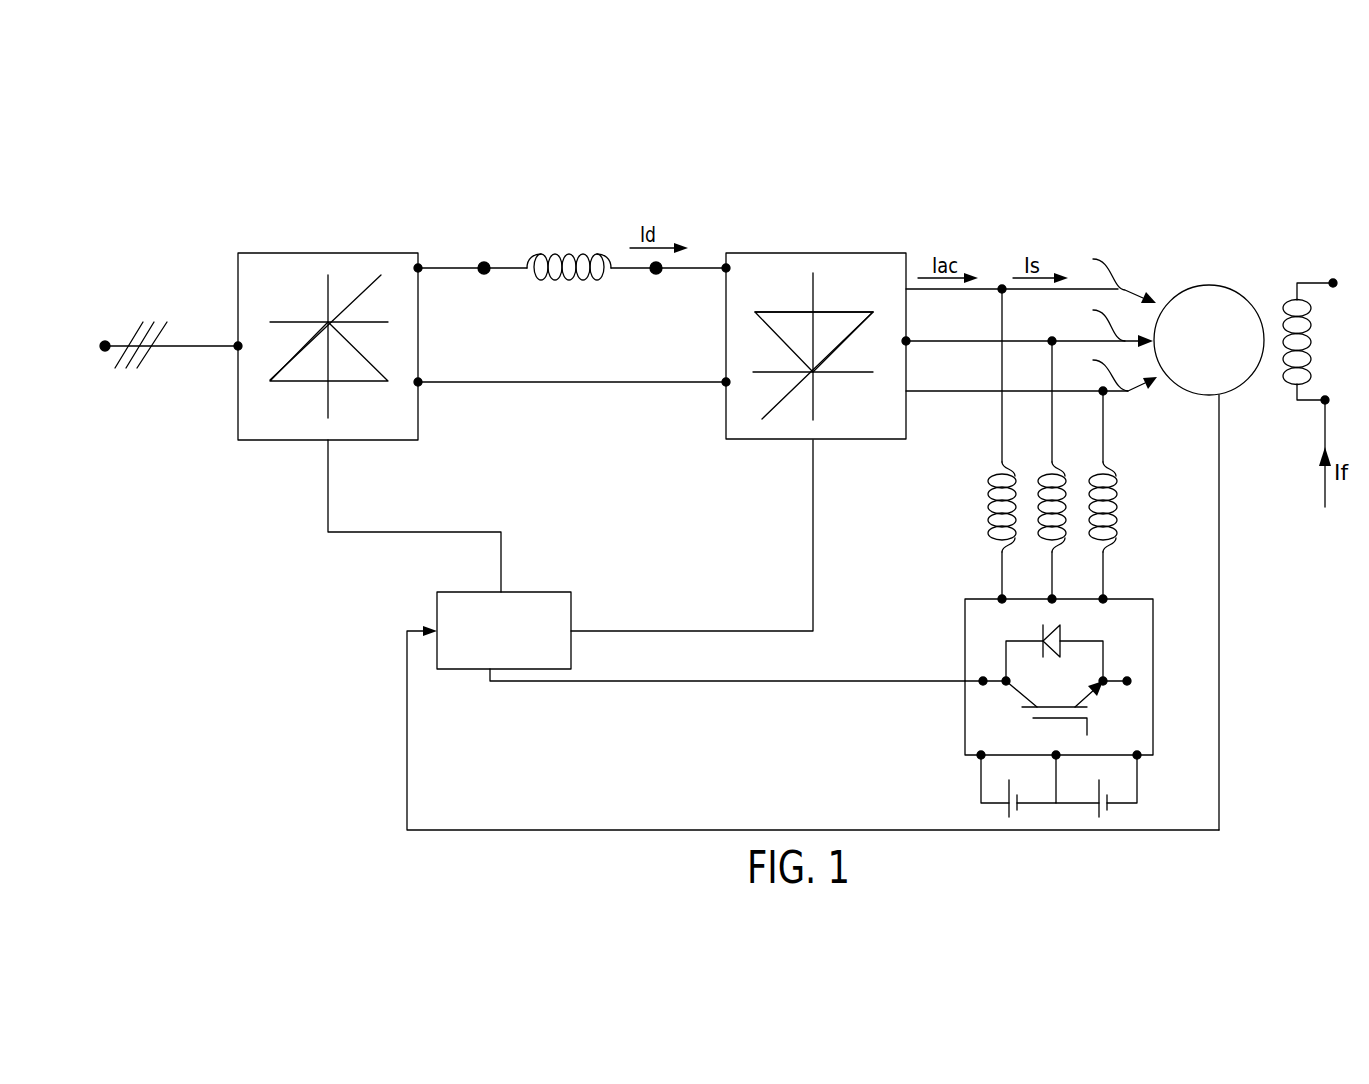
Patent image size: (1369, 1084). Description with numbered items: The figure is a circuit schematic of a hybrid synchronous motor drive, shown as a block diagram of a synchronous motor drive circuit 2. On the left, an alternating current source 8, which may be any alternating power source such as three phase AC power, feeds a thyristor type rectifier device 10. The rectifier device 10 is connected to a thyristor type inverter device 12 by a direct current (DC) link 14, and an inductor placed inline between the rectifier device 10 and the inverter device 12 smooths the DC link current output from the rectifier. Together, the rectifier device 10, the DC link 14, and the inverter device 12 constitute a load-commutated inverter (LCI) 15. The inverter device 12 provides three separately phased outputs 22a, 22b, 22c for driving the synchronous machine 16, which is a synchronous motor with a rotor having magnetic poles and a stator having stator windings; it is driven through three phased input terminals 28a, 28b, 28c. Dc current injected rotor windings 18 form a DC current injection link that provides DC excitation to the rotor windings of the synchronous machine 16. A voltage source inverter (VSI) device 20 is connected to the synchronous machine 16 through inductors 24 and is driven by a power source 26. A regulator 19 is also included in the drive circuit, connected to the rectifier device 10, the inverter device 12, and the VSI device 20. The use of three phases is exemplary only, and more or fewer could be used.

The synchronous motor drive circuit 2 is at (1056, 168).
The alternating current source 8 is at (154, 316).
The thyristor type rectifier device 10 is at (268, 253).
The thyristor type inverter device 12 is at (862, 253).
The direct current (DC) link 14 is at (577, 254).
The load-commutated inverter (LCI) 15 is at (466, 206).
The synchronous machine 16 is at (1216, 285).
The dc current injected rotor windings 18 is at (1308, 405).
The regulator 19 is at (538, 592).
The voltage source inverter (VSI) device 20 is at (1140, 598).
The separately phased output 22a is at (982, 290).
The separately phased output 22b is at (982, 342).
The separately phased output 22c is at (982, 392).
The inductors 24 is at (958, 499).
The power source 26 is at (1011, 818).
The phased input terminal 28a is at (1108, 276).
The phased input terminal 28b is at (1106, 323).
The phased input terminal 28c is at (1108, 370).